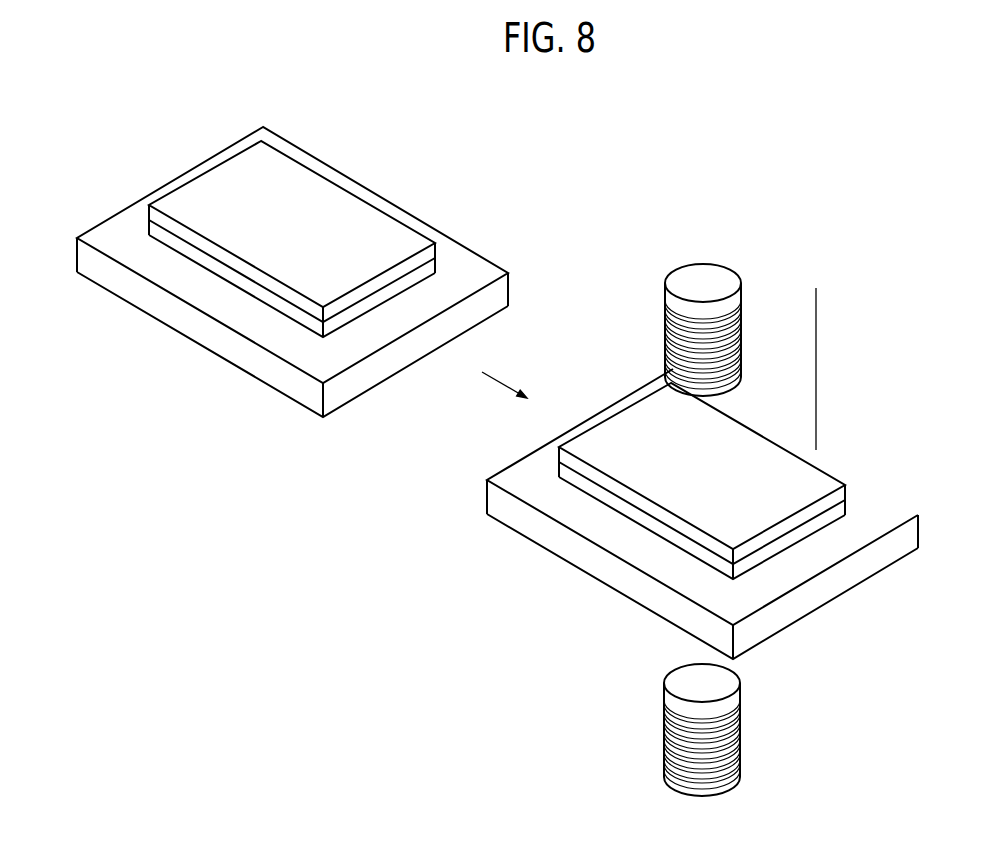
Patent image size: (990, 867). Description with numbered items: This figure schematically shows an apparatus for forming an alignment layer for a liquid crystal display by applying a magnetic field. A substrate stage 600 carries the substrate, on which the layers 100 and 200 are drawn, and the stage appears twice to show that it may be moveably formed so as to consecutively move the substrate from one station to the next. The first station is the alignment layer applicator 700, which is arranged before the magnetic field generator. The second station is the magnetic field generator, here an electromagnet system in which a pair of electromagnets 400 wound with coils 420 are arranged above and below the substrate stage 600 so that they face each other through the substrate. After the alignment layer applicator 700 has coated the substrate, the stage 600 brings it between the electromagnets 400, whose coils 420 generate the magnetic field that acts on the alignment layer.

The substrate 100 is at (258, 289).
The thin film layer 200 is at (223, 258).
The electromagnet 400 is at (728, 275).
The coil 420 is at (742, 342).
The substrate stage 600 is at (473, 263).
The alignment layer applicator 700 is at (245, 412).